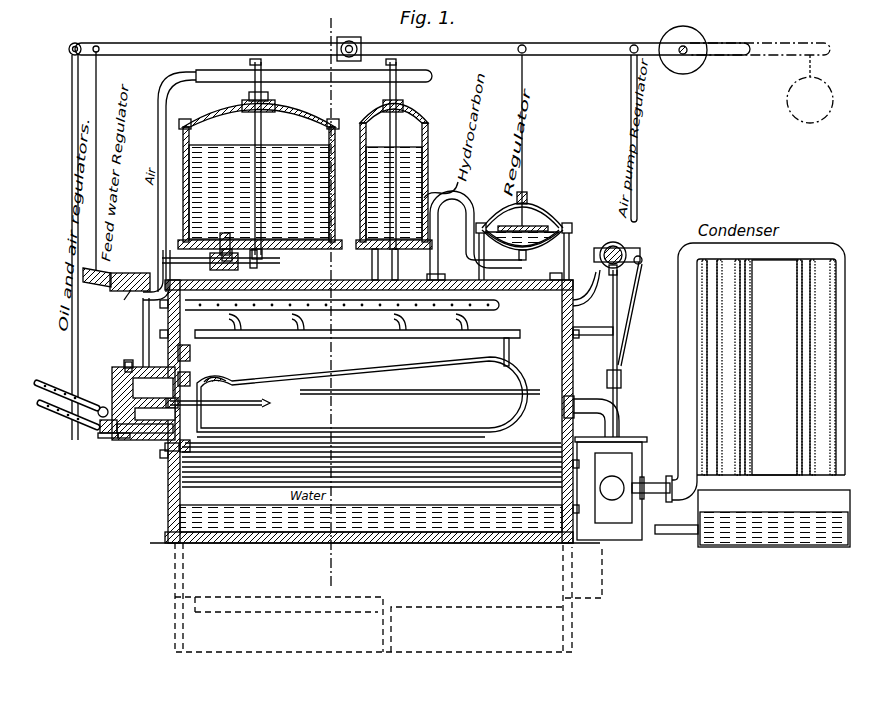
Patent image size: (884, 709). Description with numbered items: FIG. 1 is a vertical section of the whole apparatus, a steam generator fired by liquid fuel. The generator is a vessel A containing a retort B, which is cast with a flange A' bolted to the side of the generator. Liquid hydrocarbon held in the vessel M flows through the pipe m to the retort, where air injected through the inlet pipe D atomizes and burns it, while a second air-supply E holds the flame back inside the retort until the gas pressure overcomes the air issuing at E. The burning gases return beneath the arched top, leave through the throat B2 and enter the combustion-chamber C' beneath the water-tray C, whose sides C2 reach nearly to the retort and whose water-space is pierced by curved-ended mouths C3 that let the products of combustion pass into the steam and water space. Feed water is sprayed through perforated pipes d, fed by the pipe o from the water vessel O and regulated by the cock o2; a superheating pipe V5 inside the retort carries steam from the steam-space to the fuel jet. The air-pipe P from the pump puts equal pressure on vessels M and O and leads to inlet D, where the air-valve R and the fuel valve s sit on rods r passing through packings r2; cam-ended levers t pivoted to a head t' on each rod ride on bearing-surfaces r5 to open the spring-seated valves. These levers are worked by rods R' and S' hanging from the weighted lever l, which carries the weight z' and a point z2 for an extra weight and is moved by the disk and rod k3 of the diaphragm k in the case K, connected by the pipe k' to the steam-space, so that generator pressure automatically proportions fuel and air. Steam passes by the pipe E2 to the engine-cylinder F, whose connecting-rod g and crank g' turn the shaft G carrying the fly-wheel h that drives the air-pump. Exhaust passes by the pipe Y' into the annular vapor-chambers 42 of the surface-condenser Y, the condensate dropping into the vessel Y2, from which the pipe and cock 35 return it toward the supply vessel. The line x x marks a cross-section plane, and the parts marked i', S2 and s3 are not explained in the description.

The lever l is at (449, 44).
The weight z' is at (683, 43).
The extra weight z2 is at (814, 94).
The section line x x is at (320, 300).
The rod R' is at (64, 247).
The air-pipe P is at (291, 144).
The water-holding vessel O is at (257, 160).
The liquid hydrocarbon vessel M is at (399, 169).
The pipe k' is at (474, 235).
The diaphragm disk and rod k3 is at (532, 140).
The case K is at (524, 237).
The flexible diaphragm k is at (524, 228).
The air pump regulator rod i' is at (640, 138).
The generator vessel A is at (375, 411).
The flange A' is at (180, 409).
The perforated water pipe d is at (342, 298).
The water-tray C is at (357, 348).
The openings C3 is at (338, 322).
The tray sides C2 is at (265, 353).
The combustion-chamber C' is at (306, 353).
The retort B is at (362, 388).
The throat B2 is at (213, 369).
The superheating pipe V5 is at (446, 396).
The superheated steam pipe S2 is at (266, 407).
The second air-supply E is at (184, 380).
The air inlet pipe D is at (178, 409).
The fly-wheel h is at (372, 467).
The water pipe o is at (203, 262).
The fuel pipe m is at (144, 337).
The cock o2 is at (121, 301).
The rod S' is at (92, 345).
The air-valve R is at (143, 410).
The bearing-surfaces r5 is at (122, 388).
The valve rod r is at (100, 432).
The cam-levers t is at (67, 399).
The head t' is at (87, 442).
The fuel valve s is at (100, 445).
The packing r2 is at (118, 437).
The connection s3 is at (172, 452).
The shaft G is at (606, 282).
The crank g' is at (645, 248).
The connecting-rod g is at (626, 349).
The steam pipe E2 is at (597, 398).
The engine-cylinder F is at (623, 488).
The exhaust pipe Y' is at (752, 371).
The surface-condenser Y is at (771, 367).
The annular vapor-chambers 42 is at (822, 440).
The water-holding vessel Y2 is at (772, 547).
The pipe and cock 35 is at (676, 522).